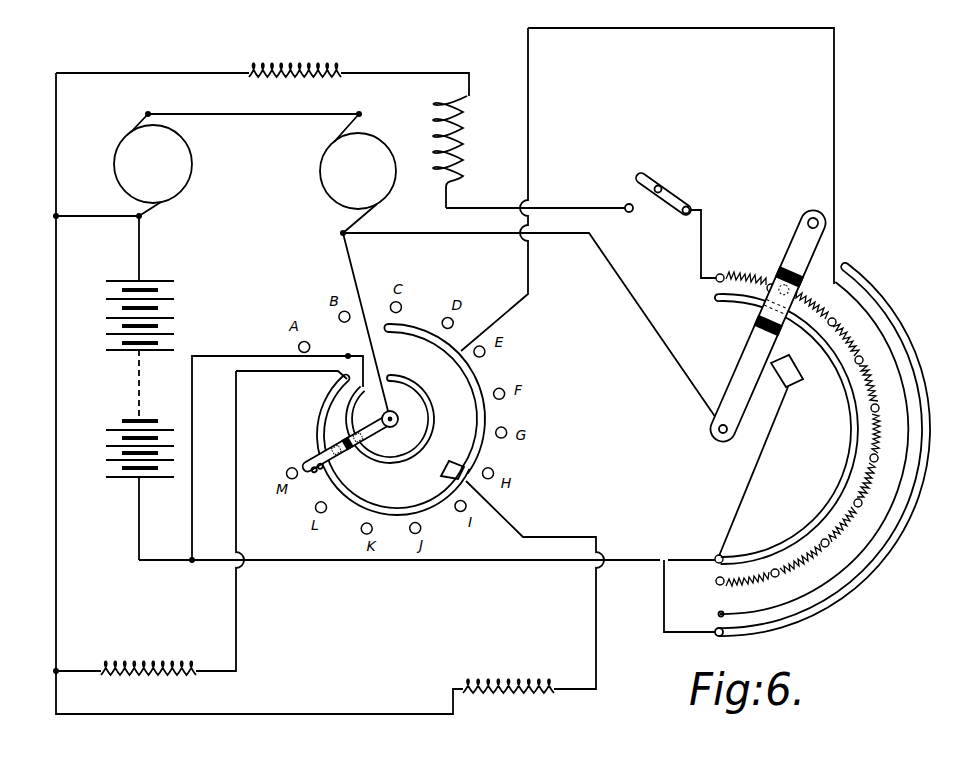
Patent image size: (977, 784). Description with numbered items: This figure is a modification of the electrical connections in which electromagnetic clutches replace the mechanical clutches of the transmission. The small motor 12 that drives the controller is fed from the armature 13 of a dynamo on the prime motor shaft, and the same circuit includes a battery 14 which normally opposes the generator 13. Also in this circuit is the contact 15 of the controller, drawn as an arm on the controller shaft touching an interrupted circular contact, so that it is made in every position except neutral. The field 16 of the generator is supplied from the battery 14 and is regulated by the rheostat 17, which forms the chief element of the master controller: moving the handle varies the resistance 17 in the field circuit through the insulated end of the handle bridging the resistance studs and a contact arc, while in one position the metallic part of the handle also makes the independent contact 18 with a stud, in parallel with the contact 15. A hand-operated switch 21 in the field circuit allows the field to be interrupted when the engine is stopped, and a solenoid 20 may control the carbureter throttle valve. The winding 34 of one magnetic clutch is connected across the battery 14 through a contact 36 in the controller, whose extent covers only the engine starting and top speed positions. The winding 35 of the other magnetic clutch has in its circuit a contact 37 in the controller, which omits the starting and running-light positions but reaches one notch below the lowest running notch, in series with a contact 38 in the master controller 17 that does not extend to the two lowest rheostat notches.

The small motor 12 is at (153, 164).
The armature of a dynamo 13 is at (358, 171).
The battery 14 is at (106, 353).
The contact 15 is at (430, 411).
The field 16 is at (466, 150).
The rheostat 17 is at (805, 431).
The independent contact 18 is at (791, 387).
The solenoid 20 is at (298, 69).
The switch 21 is at (666, 192).
The winding of a magnetic clutch 34 is at (148, 685).
The winding of a magnetic clutch 35 is at (508, 703).
The contact 36 is at (323, 408).
The contact 37 is at (427, 340).
The contact 38 is at (905, 384).